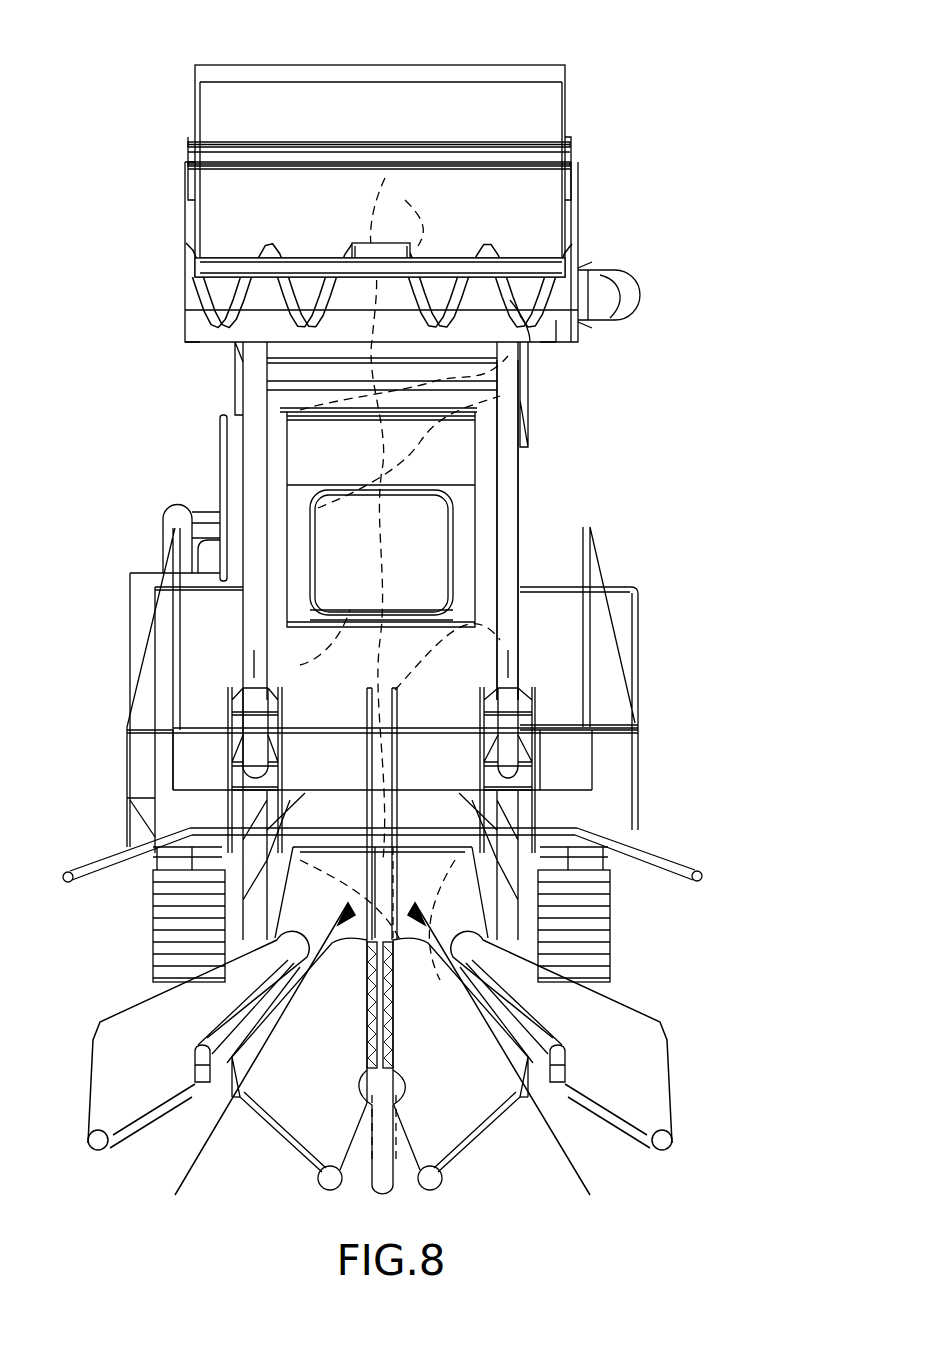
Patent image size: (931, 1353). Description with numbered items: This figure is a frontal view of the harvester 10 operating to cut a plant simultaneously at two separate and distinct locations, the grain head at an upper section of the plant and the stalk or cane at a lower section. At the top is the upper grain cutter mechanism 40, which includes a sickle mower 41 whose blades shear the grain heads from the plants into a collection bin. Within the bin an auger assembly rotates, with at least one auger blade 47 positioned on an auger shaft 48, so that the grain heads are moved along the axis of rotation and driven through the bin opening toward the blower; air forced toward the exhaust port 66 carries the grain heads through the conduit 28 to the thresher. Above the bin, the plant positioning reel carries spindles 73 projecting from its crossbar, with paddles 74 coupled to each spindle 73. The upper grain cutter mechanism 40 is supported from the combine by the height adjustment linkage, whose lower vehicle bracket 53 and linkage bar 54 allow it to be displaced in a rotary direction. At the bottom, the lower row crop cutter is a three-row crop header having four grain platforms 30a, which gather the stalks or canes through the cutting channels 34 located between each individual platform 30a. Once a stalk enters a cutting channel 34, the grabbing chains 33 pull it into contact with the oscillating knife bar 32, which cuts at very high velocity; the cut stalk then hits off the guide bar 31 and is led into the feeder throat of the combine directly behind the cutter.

The harvester 10 is at (382, 580).
The conduit 28 is at (626, 298).
The grain platforms 30a is at (644, 1020).
The guide bars 31 is at (85, 866).
The oscillating knife bar 32 is at (207, 1040).
The grabbing chains 33 is at (208, 1084).
The cutting channels 34 is at (548, 1085).
The upper grain cutter mechanism 40 is at (580, 188).
The sickle mower 41 is at (196, 345).
The auger blade 47 is at (532, 308).
The auger shaft 48 is at (561, 305).
The lower vehicle bracket 53 is at (536, 760).
The linkage bar 54 is at (519, 483).
The exhaust port 66 is at (582, 272).
The spindles 73 is at (568, 100).
The paddles 74 is at (553, 77).